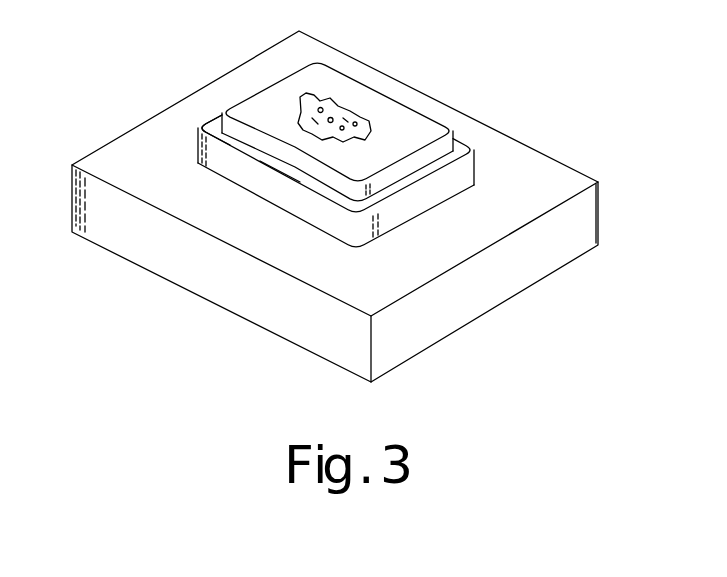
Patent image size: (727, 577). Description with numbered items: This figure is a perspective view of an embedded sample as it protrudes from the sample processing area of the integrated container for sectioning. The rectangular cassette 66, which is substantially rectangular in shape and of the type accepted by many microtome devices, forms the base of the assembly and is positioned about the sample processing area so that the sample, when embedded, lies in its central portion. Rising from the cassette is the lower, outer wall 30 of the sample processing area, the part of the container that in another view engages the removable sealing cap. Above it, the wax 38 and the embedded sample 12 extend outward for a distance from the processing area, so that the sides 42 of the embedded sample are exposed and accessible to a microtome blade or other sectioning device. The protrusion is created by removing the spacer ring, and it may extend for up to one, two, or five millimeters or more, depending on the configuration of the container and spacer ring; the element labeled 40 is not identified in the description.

The embedded sample 12 is at (352, 106).
The lower outer wall 30 is at (448, 185).
The wax 38 is at (262, 110).
The ledge of holder block 40 is at (203, 127).
The sides 42 is at (293, 160).
The rectangular cassette 66 is at (545, 185).